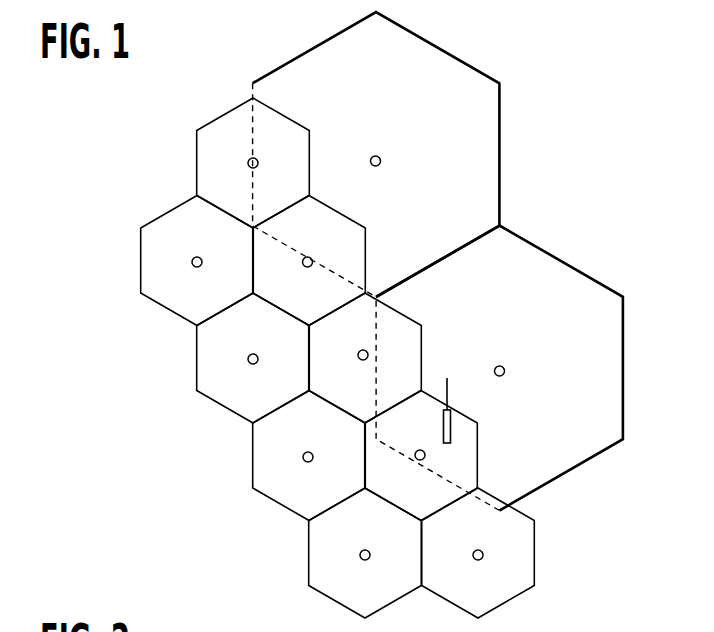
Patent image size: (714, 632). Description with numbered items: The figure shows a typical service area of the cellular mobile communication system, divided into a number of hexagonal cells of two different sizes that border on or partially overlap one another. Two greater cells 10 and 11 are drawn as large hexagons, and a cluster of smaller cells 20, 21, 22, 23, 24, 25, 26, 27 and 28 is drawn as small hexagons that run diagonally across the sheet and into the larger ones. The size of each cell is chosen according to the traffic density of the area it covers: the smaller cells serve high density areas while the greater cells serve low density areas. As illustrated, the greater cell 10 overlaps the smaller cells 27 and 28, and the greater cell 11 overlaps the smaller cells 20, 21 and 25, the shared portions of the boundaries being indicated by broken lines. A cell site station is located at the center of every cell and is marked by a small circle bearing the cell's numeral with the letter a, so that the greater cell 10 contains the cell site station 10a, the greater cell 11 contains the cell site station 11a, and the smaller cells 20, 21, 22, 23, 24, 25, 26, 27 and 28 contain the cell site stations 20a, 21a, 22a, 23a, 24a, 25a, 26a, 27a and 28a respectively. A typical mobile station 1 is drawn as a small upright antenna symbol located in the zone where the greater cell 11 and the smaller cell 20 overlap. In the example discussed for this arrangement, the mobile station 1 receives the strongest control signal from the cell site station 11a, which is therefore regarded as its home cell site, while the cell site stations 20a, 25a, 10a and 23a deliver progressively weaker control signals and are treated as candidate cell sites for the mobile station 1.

The mobile station 1 is at (448, 381).
The greater cell 10 is at (428, 42).
The cell site station of greater cell 10 10a is at (377, 149).
The greater cell 11 is at (522, 243).
The cell site station of greater cell 11 11a is at (502, 358).
The smaller cell 20 is at (473, 428).
The cell site station of smaller cell 20 20a is at (419, 442).
The smaller cell 21 is at (533, 532).
The cell site station of smaller cell 21 21a is at (479, 542).
The smaller cell 22 is at (335, 600).
The cell site station of smaller cell 22 22a is at (367, 543).
The smaller cell 23 is at (271, 498).
The cell site station of smaller cell 23 23a is at (311, 445).
The smaller cell 24 is at (208, 398).
The cell site station of smaller cell 24 24a is at (256, 346).
The smaller cell 25 is at (407, 323).
The cell site station of smaller cell 25 25a is at (366, 343).
The smaller cell 26 is at (158, 303).
The cell site station of smaller cell 26 26a is at (198, 249).
The smaller cell 27 is at (339, 214).
The cell site station of smaller cell 27 27a is at (309, 249).
The smaller cell 28 is at (205, 153).
The cell site station of smaller cell 28 28a is at (254, 151).